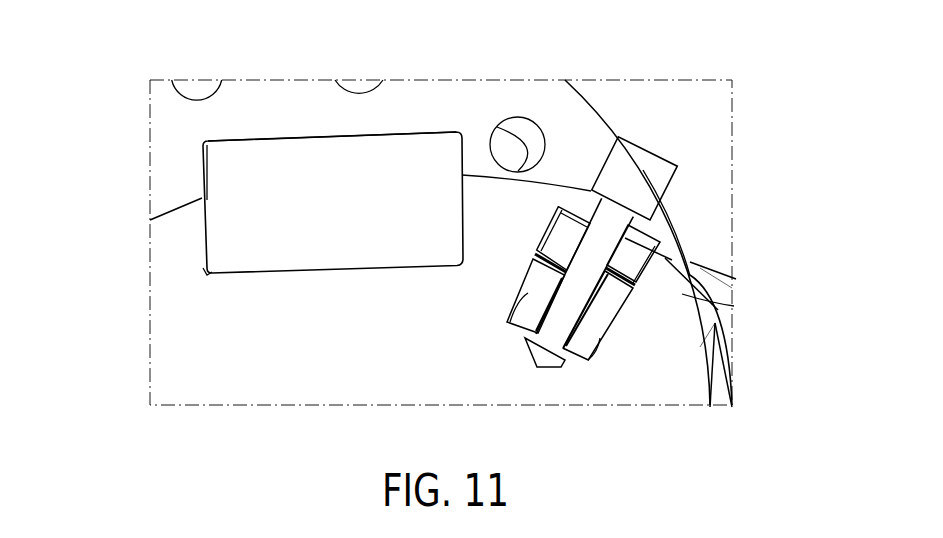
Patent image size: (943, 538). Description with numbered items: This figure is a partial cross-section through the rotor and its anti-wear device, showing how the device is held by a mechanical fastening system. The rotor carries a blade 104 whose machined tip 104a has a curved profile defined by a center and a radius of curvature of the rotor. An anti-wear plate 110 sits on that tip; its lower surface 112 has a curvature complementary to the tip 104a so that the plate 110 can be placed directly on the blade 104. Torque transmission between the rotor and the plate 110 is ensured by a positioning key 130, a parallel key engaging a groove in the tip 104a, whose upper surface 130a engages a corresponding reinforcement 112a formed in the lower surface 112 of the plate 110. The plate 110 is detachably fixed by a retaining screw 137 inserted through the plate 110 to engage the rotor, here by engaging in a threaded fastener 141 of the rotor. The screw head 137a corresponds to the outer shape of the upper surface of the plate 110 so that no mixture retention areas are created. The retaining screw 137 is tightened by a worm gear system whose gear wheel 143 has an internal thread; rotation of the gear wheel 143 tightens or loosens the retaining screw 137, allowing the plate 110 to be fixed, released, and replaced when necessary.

The blade 104 is at (667, 373).
The tip 104a is at (668, 292).
The plate 110 is at (570, 130).
The lower surface 112 is at (170, 211).
The reinforcement 112a is at (215, 163).
The positioning key 130 is at (420, 132).
The upper surface 130a is at (295, 137).
The retaining screw 137 is at (553, 328).
The screw head 137a is at (632, 187).
The threaded fastener 141 is at (630, 270).
The gear wheel 143 is at (577, 353).